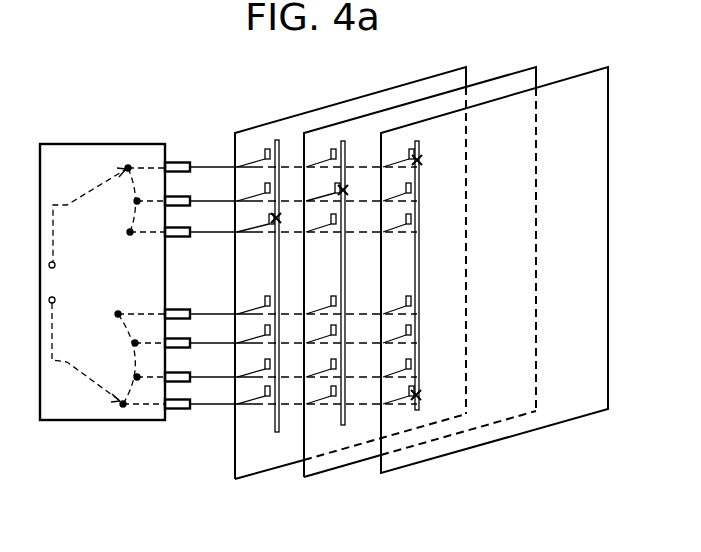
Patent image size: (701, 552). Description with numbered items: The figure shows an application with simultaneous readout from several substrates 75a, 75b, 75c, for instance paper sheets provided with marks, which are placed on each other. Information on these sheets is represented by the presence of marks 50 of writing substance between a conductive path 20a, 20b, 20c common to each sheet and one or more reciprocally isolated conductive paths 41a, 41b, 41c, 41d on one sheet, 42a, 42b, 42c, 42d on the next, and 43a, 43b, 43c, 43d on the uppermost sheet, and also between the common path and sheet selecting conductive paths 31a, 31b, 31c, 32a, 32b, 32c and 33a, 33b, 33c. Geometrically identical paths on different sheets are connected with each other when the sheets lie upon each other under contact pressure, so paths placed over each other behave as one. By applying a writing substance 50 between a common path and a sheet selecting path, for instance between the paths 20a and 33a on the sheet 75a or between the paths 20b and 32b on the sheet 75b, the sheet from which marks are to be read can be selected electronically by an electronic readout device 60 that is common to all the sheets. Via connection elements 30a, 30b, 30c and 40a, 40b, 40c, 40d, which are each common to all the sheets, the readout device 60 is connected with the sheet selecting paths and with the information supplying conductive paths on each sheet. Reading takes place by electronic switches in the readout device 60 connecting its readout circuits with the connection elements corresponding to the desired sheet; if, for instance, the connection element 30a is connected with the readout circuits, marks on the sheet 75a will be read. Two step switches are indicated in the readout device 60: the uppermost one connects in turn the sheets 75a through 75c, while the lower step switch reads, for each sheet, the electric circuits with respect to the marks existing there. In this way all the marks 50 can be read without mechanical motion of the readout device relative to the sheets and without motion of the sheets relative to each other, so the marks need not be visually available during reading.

The electronic readout device 60 is at (89, 412).
The connection element 30a is at (181, 163).
The connection element 30b is at (181, 197).
The connection element 30c is at (181, 228).
The connection element 40a is at (181, 310).
The connection element 40b is at (181, 339).
The connection element 40c is at (181, 373).
The connection element 40d is at (181, 400).
The substrate 75a is at (413, 462).
The substrate 75b is at (334, 463).
The substrate 75c is at (250, 465).
The common conductive path 20a is at (419, 247).
The common conductive path 20b is at (345, 250).
The common conductive path 20c is at (275, 247).
The sheet selecting conductive path 31a is at (253, 152).
The sheet selecting conductive path 31b is at (253, 187).
The sheet selecting conductive path 31c is at (255, 218).
The conductive path 41a is at (253, 294).
The conductive path 41b is at (253, 329).
The conductive path 41c is at (253, 361).
The conductive path 41d is at (253, 391).
The sheet selecting conductive path 32a is at (321, 152).
The sheet selecting conductive path 32b is at (323, 187).
The sheet selecting conductive path 32c is at (321, 218).
The conductive path 42a is at (321, 294).
The conductive path 42b is at (321, 329).
The conductive path 42c is at (321, 361).
The conductive path 42d is at (321, 391).
The sheet selecting conductive path 33a is at (398, 152).
The sheet selecting conductive path 33b is at (397, 187).
The sheet selecting conductive path 33c is at (397, 218).
The conductive path 43a is at (397, 294).
The conductive path 43b is at (397, 329).
The conductive path 43c is at (397, 361).
The conductive path 43d is at (398, 391).
The mark of writing substance 50 is at (421, 160).